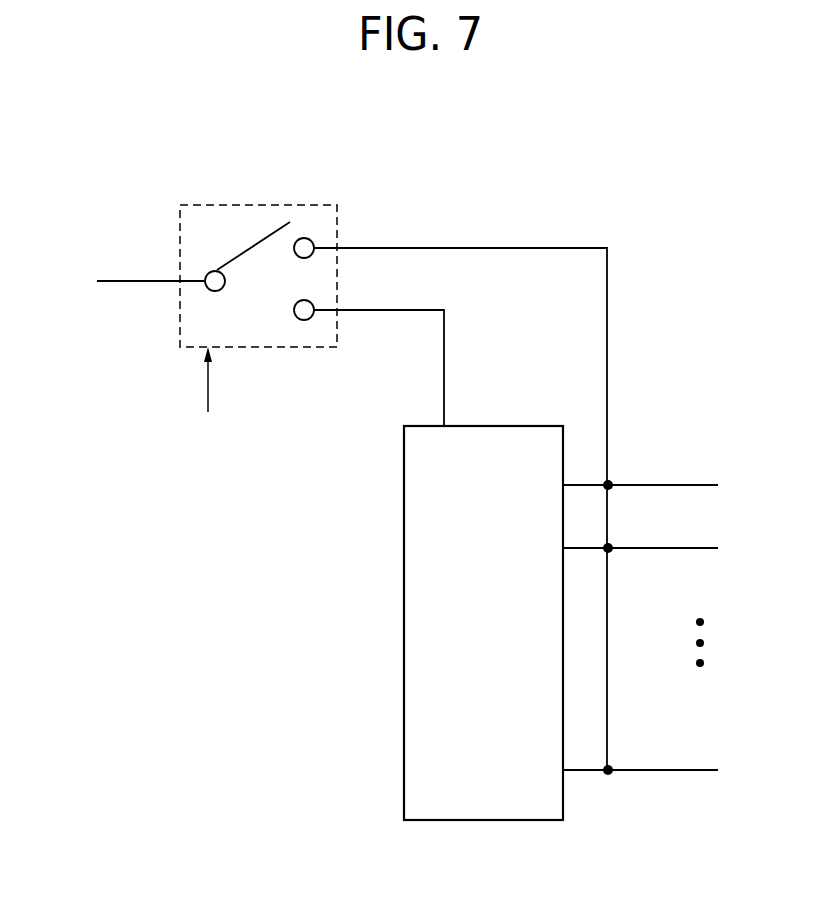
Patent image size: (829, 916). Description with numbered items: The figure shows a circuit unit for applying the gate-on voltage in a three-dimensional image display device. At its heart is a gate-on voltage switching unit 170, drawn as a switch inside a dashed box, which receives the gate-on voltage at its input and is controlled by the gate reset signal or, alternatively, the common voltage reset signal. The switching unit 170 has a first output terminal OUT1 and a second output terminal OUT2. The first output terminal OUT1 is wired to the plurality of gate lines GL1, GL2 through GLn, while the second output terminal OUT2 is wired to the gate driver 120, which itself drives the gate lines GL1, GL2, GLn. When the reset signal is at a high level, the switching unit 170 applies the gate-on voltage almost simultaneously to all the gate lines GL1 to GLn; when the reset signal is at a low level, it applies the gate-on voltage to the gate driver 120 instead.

The gate-on voltage switching unit 170 is at (206, 204).
The gate driver 120 is at (435, 820).
The first output terminal OUT1 is at (460, 489).
The second output terminal OUT2 is at (379, 347).
The gate line GL1 is at (644, 466).
The gate line GL2 is at (644, 529).
The gate line GLn is at (644, 750).